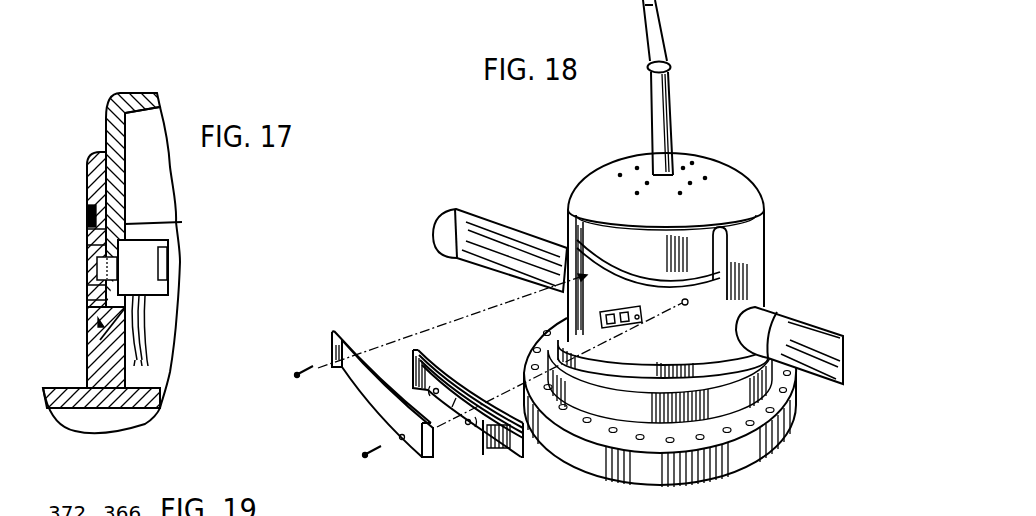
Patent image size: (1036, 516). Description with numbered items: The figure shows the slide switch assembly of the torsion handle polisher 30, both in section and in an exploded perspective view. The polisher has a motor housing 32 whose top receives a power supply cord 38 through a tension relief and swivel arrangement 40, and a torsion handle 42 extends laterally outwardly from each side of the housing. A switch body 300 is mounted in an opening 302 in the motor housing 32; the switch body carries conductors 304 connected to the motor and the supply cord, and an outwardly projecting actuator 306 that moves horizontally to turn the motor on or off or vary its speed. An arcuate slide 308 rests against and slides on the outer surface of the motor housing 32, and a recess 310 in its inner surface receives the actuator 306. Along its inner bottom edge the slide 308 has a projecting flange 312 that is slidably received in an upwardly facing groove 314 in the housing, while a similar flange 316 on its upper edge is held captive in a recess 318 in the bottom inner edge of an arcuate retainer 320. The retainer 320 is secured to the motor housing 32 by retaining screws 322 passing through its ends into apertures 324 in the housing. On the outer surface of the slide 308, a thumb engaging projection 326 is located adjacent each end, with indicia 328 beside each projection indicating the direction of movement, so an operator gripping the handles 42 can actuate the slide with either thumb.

In FIG. 18, the torsion handle polisher 30 is at (693, 150).
In FIG. 18, the motor housing 32 is at (725, 185).
In FIG. 18, the power supply cord 38 is at (657, 30).
In FIG. 18, the tension relief and swivel arrangement 40 is at (662, 98).
In FIG. 18, the torsion handle 42 is at (508, 223).
In FIG. 17, the switch body 300 is at (161, 249).
In FIG. 17, the opening 302 is at (173, 223).
In FIG. 18, the opening 302 is at (637, 318).
In FIG. 17, the conductors 304 is at (143, 332).
In FIG. 17, the actuator 306 is at (90, 276).
In FIG. 18, the actuator 306 is at (565, 306).
In FIG. 17, the arcuate slide 308 is at (88, 237).
In FIG. 18, the arcuate slide 308 is at (453, 406).
In FIG. 17, the recess 310 is at (97, 259).
In FIG. 17, the projecting flange 312 is at (95, 352).
In FIG. 17, the groove 314 is at (97, 330).
In FIG. 17, the flange 316 is at (143, 250).
In FIG. 17, the recess 318 is at (88, 208).
In FIG. 17, the arcuate retainer 320 is at (90, 160).
In FIG. 18, the arcuate retainer 320 is at (358, 412).
In FIG. 18, the retaining screws 322 is at (306, 362).
In FIG. 18, the apertures 324 is at (688, 302).
In FIG. 18, the thumb engaging projection 326 is at (412, 368).
In FIG. 18, the indicia 328 is at (437, 387).